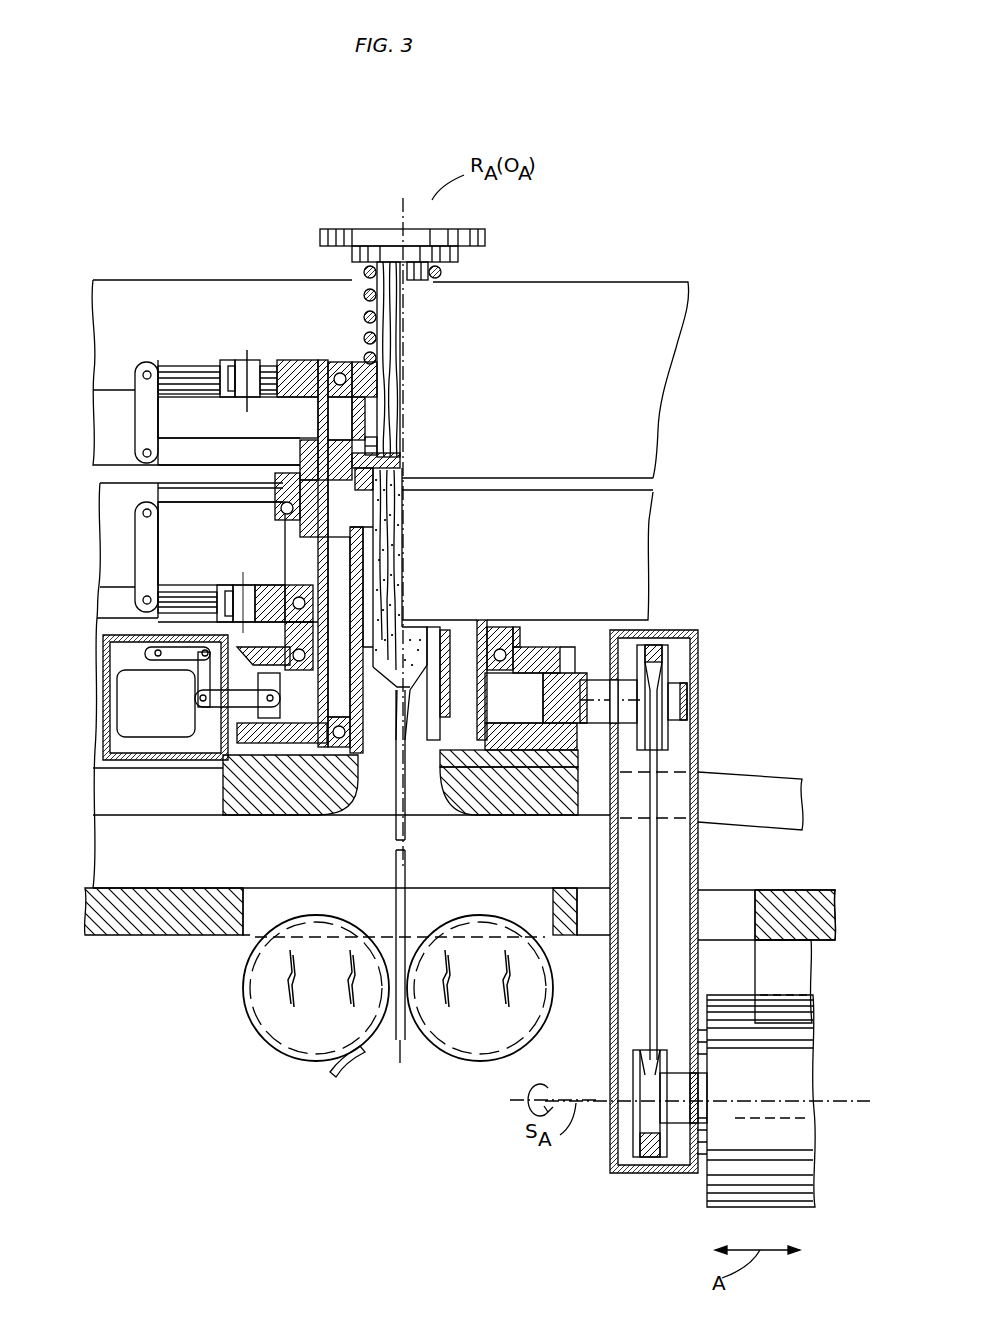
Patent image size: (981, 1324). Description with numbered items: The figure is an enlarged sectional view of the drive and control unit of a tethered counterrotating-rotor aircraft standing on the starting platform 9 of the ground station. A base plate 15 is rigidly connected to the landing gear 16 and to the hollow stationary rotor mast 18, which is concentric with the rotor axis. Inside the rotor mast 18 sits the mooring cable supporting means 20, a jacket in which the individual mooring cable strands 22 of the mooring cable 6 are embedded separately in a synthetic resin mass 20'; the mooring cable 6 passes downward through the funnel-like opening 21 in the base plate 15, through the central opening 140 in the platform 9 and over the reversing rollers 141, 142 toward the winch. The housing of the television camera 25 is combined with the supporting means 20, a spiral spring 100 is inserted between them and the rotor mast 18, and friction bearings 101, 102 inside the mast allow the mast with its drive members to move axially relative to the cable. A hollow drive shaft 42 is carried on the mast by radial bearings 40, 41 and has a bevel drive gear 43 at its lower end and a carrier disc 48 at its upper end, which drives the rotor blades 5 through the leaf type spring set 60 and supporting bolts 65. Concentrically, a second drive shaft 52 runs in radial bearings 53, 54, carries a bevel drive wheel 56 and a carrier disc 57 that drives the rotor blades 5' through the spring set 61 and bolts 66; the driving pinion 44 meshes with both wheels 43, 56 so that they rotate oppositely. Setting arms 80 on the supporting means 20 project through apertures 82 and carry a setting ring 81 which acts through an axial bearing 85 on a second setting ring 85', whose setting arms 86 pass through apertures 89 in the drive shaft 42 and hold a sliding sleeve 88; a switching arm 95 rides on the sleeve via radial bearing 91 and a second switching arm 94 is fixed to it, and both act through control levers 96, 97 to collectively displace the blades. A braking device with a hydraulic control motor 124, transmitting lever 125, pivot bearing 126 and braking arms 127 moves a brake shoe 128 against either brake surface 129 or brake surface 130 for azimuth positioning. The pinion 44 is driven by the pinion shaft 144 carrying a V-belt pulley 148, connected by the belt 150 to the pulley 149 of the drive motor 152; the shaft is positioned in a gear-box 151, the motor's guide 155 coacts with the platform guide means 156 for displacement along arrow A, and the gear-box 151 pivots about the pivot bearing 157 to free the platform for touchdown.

The rotor blades 5 is at (365, 385).
The rotor blades 5' is at (350, 685).
The mooring cable 6 is at (402, 878).
The starting platform 9 is at (137, 927).
The base plate 15 is at (285, 805).
The landing gear 16 is at (773, 790).
The rotor mast 18 is at (445, 673).
The mooring cable supporting means 20 is at (373, 773).
The synthetic resin mass 20' is at (397, 587).
The funnel-like opening 21 is at (447, 798).
The mooring cable strands 22 is at (393, 557).
The television camera 25 is at (320, 233).
The radial bearing 40 is at (350, 368).
The radial bearing 41 is at (477, 818).
The drive shaft 42 is at (302, 362).
The bevel drive gear 43 is at (528, 817).
The driving pinion 44 is at (570, 673).
The carrier disc 48 is at (226, 365).
The second drive shaft 52 is at (287, 587).
The radial bearing 53 is at (320, 578).
The radial bearing 54 is at (307, 672).
The bevel drive wheel 56 is at (515, 640).
The carrier disc 57 is at (217, 585).
The leaf type spring set 60 is at (176, 370).
The leaf type spring set 61 is at (177, 597).
The supporting bolt 65 is at (250, 362).
The supporting bolt 66 is at (248, 582).
The setting arms 80 is at (400, 457).
The setting ring 81 is at (340, 437).
The apertures 82 is at (360, 493).
The axial bearing 85 is at (405, 429).
The second setting ring 85' is at (289, 514).
The setting arms 86 is at (373, 513).
The sliding sleeve 88 is at (301, 462).
The apertures 89 is at (380, 570).
The radial bearing 91 is at (247, 396).
The second switching arm 94 is at (203, 450).
The switching arm 95 is at (172, 510).
The control lever 96 is at (140, 370).
The control lever 97 is at (137, 515).
The spiral spring 100 is at (367, 293).
The friction bearing 101 is at (372, 368).
The friction bearing 102 is at (375, 587).
The control motor 124 is at (178, 698).
The transmitting lever 125 is at (198, 687).
The pivot bearing 126 is at (233, 695).
The braking arms 127 is at (229, 752).
The brake shoe 128 is at (253, 767).
The brake surface 129 is at (548, 670).
The brake surface 130 is at (538, 720).
The opening 140 is at (233, 937).
The reversing roller 141 is at (295, 1020).
The reversing roller 142 is at (475, 1033).
The pinion shaft 144 is at (607, 687).
The V-belt pulley 148 is at (668, 663).
The V-belt pulley 149 is at (643, 1115).
The belt 150 is at (648, 1023).
The gear-box 151 is at (698, 740).
The drive motor 152 is at (795, 1148).
The guide 155 is at (763, 980).
The guide means 156 is at (810, 952).
The pivot bearing 157 is at (700, 1123).